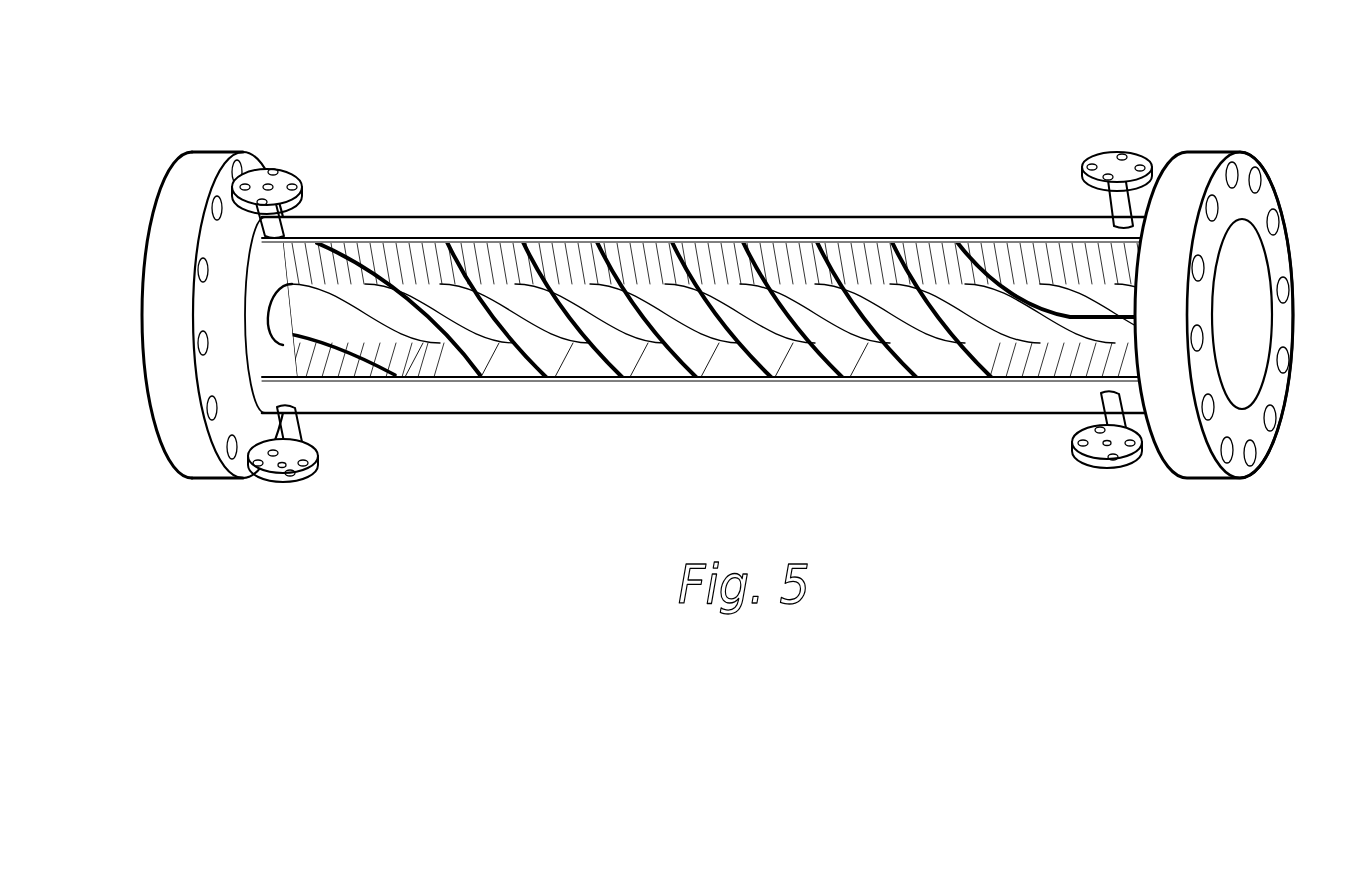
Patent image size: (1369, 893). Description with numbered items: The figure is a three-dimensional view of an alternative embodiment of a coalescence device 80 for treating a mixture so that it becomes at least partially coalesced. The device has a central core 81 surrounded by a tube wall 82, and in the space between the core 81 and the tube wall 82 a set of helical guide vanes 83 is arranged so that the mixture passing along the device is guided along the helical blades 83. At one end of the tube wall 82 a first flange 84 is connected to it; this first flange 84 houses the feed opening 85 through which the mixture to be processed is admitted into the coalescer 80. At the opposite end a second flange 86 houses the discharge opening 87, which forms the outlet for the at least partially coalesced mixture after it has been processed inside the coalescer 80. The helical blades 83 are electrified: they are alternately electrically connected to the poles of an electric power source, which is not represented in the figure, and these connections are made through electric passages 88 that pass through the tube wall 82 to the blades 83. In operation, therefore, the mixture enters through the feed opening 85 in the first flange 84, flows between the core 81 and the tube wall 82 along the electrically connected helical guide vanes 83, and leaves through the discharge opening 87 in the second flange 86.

The coalescence device 80 is at (265, 85).
The core 81 is at (435, 297).
The tube wall 82 is at (763, 232).
The helical guide vanes 83 is at (540, 343).
The first flange 84 is at (158, 444).
The feed opening 85 is at (263, 348).
The second flange 86 is at (1250, 320).
The discharge opening 87 is at (1245, 318).
The electric passages 88 is at (1117, 163).